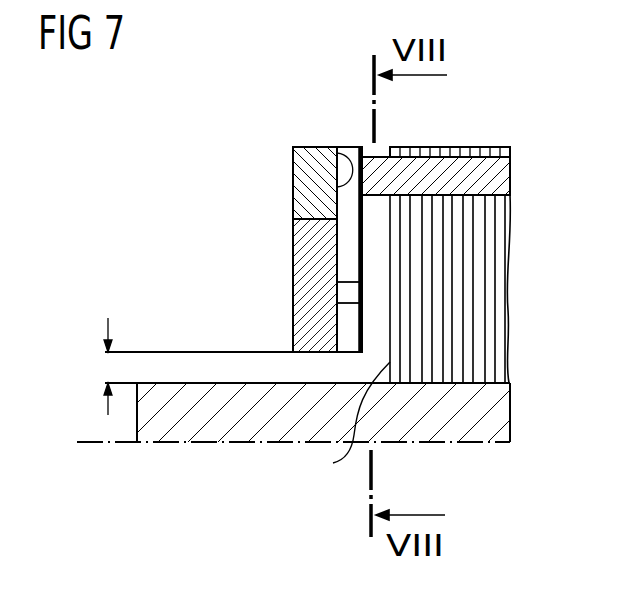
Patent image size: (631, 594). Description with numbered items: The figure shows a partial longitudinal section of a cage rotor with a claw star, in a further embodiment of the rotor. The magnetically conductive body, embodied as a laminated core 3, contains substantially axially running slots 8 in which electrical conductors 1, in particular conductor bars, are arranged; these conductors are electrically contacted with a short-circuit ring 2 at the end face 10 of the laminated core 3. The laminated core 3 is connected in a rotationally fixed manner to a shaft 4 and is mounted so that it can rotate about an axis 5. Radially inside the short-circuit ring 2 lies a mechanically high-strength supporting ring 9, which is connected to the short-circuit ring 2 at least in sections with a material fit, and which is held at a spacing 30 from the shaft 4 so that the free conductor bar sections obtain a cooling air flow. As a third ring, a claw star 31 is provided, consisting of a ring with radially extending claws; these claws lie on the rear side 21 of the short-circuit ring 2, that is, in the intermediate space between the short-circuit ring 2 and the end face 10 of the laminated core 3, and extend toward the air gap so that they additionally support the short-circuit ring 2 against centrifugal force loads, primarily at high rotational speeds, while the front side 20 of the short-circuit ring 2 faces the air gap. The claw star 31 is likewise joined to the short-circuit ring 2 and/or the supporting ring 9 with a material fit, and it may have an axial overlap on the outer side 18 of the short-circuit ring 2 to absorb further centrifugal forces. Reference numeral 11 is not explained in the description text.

The electrical conductors 1 is at (510, 173).
The short-circuit ring 2 is at (291, 155).
The laminated core 3 is at (500, 235).
The shaft 4 is at (203, 438).
The axis 5 is at (89, 447).
The slots 8 is at (490, 146).
The supporting ring 9 is at (293, 278).
The end face 10 is at (344, 422).
The lower clamping part 11 is at (293, 232).
The outer side 18 is at (300, 145).
The front side 20 is at (293, 196).
The rear side 21 is at (343, 146).
The spacing 30 is at (110, 367).
The claw star 31 is at (350, 333).